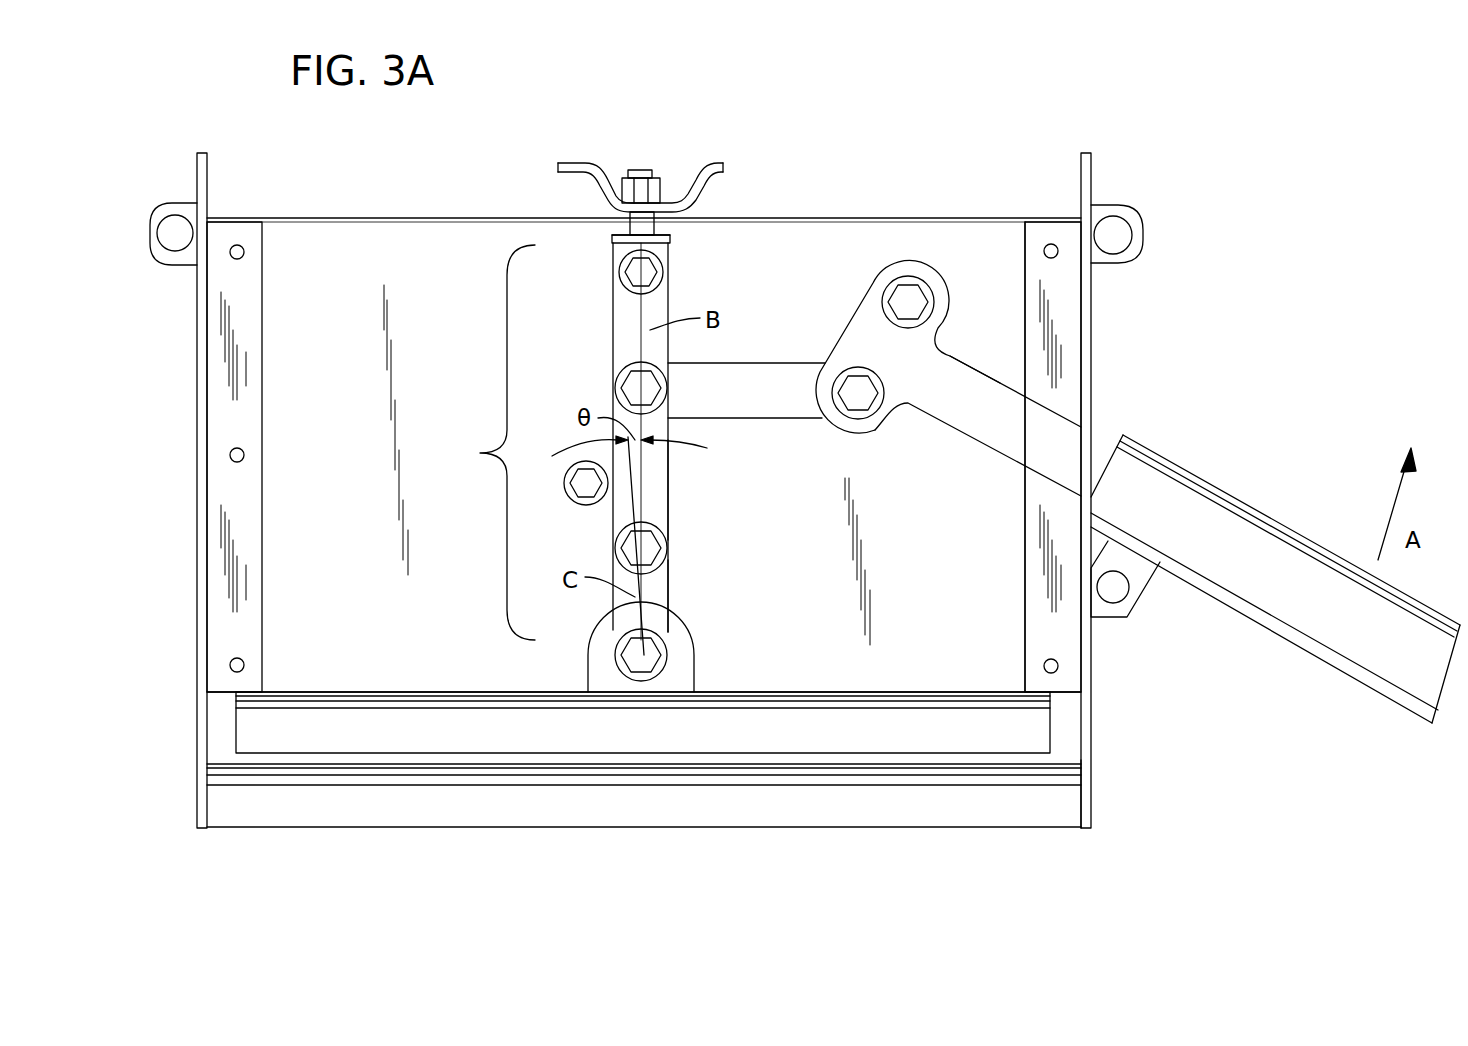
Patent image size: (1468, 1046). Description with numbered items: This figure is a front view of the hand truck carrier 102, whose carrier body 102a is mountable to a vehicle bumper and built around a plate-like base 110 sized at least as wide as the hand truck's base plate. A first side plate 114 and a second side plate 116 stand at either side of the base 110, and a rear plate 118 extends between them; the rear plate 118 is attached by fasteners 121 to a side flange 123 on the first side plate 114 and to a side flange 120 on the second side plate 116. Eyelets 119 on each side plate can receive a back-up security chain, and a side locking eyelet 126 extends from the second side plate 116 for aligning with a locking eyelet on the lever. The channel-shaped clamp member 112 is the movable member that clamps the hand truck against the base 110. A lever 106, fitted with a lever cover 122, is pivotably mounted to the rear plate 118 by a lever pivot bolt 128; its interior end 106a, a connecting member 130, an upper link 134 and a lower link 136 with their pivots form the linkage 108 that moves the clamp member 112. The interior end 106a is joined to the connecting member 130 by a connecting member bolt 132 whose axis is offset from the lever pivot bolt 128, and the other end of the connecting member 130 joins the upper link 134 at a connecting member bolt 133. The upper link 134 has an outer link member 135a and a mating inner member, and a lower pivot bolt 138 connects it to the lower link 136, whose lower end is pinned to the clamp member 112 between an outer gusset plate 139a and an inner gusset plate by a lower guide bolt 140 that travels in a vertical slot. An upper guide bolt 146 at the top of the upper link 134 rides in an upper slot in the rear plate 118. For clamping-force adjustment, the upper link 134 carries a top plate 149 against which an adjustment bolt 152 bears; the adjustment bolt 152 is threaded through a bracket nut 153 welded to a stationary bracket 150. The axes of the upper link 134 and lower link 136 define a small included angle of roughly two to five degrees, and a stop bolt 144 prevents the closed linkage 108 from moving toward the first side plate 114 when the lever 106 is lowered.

The carrier 102 is at (1134, 146).
The carrier body 102a is at (1095, 718).
The lever 106 is at (1100, 448).
The interior end 106a is at (960, 380).
The linkage 108 is at (481, 442).
The base 110 is at (500, 815).
The clamp member 112 is at (430, 705).
The first side plate 114 is at (200, 390).
The second side plate 116 is at (1093, 355).
The rear plate 118 is at (445, 230).
The eyelets 119 is at (168, 205).
The side flange 120 is at (1022, 545).
The fasteners 121 is at (244, 252).
The lever cover 122 is at (1232, 505).
The side flange 123 is at (250, 350).
The side locking eyelet 126 is at (1142, 573).
The lever pivot bolt 128 is at (910, 278).
The connecting member 130 is at (750, 363).
The connecting member bolt 132 is at (855, 370).
The connecting member bolt 133 is at (614, 390).
The upper link 134 is at (625, 330).
The outer link member 135a is at (668, 492).
The lower link 136 is at (666, 583).
The lower pivot bolt 138 is at (660, 553).
The outer gusset plate 139a is at (697, 682).
The lower guide bolt 140 is at (662, 660).
The stop bolt 144 is at (576, 495).
The upper guide bolt 146 is at (662, 285).
The top plate 149 is at (670, 238).
The bracket 150 is at (722, 165).
The adjustment bolt 152 is at (645, 172).
The bracket nut 153 is at (625, 185).